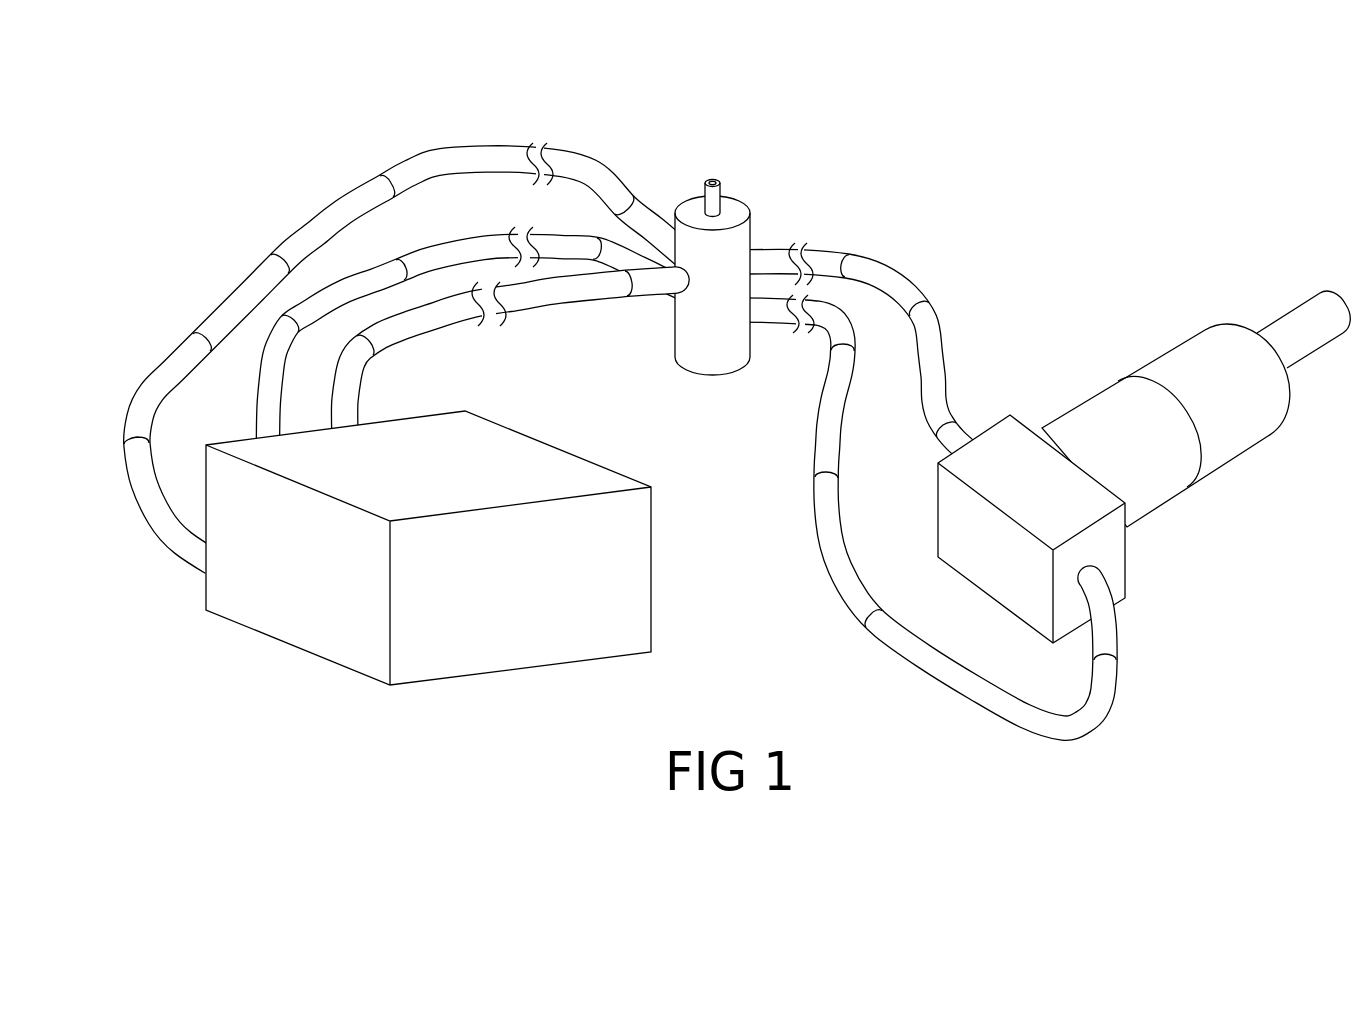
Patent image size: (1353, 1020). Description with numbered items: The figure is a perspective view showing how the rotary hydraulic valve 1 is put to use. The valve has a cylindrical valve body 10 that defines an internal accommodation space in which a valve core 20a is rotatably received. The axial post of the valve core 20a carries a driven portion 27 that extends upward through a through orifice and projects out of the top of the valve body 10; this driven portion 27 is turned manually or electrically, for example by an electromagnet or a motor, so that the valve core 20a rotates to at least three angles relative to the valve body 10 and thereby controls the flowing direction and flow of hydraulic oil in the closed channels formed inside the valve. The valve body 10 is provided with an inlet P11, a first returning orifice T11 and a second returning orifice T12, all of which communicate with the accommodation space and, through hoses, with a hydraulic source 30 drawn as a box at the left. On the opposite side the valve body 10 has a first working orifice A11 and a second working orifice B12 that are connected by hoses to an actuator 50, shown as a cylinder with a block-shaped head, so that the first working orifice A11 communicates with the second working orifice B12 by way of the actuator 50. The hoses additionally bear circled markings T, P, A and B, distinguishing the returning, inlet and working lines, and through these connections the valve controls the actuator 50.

The rotary hydraulic valve 1 is at (740, 220).
The valve body 10 is at (747, 235).
The valve core 20a is at (776, 171).
The driven portion 27 is at (776, 171).
The hydraulic source 30 is at (573, 585).
The actuator 50 is at (1098, 418).
The first returning orifice T11 is at (675, 250).
The second returning orifice T12 is at (673, 311).
The inlet P11 is at (680, 292).
The first working orifice A11 is at (772, 256).
The second working orifice B12 is at (747, 313).
The tank port line T is at (408, 340).
The pressure port line P is at (512, 355).
The working port A line A is at (855, 335).
The working port B line B is at (925, 519).